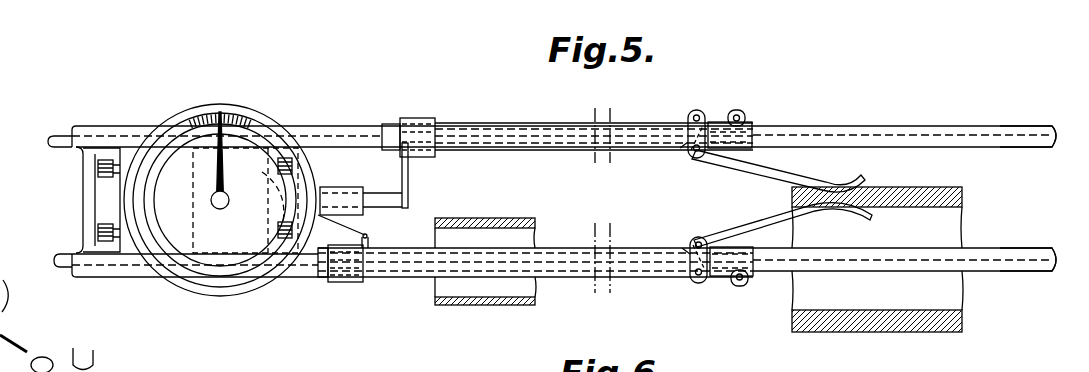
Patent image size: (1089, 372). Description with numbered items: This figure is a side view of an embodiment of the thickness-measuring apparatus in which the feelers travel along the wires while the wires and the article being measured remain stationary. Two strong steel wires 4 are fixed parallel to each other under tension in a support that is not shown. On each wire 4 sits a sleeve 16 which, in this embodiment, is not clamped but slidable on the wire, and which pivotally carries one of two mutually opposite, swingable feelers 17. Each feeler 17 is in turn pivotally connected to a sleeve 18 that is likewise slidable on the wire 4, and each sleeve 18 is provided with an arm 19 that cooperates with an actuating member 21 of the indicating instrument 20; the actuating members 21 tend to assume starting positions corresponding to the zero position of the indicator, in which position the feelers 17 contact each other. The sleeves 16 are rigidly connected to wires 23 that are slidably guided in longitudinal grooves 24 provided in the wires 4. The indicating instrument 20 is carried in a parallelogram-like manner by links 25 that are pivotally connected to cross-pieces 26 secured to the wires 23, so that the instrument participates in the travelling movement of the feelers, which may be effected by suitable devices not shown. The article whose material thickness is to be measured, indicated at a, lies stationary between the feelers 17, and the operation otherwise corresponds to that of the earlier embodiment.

The steel wire 4 is at (1027, 125).
The sleeve 16 is at (723, 118).
The feeler 17 is at (773, 168).
The sleeve 18 is at (578, 124).
The arm 19 is at (408, 178).
The indicating instrument 20 is at (218, 297).
The actuating member 21 is at (380, 194).
The wire 23 is at (56, 138).
The longitudinal groove 24 is at (1027, 147).
The link 25 is at (115, 226).
The cross-piece 26 is at (83, 190).
The block a is at (495, 305).